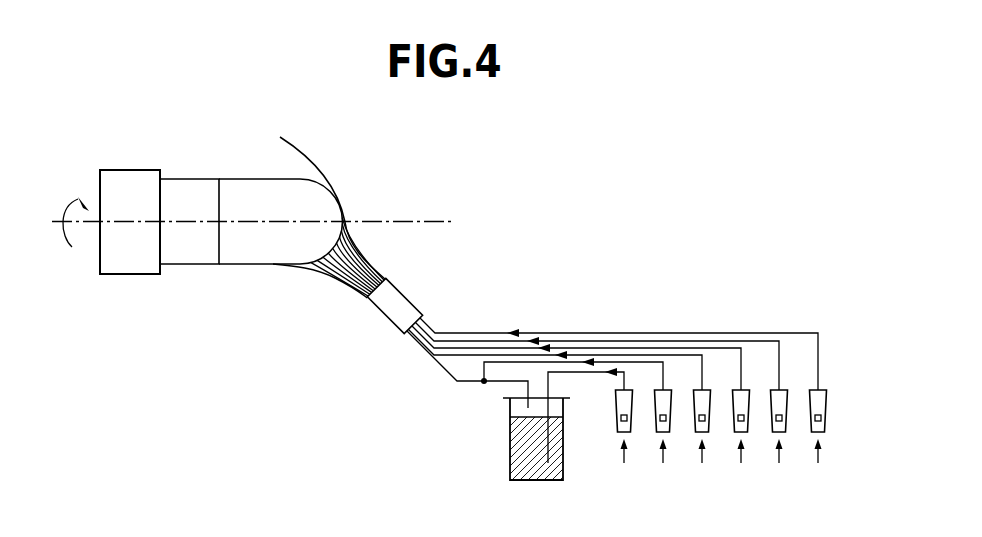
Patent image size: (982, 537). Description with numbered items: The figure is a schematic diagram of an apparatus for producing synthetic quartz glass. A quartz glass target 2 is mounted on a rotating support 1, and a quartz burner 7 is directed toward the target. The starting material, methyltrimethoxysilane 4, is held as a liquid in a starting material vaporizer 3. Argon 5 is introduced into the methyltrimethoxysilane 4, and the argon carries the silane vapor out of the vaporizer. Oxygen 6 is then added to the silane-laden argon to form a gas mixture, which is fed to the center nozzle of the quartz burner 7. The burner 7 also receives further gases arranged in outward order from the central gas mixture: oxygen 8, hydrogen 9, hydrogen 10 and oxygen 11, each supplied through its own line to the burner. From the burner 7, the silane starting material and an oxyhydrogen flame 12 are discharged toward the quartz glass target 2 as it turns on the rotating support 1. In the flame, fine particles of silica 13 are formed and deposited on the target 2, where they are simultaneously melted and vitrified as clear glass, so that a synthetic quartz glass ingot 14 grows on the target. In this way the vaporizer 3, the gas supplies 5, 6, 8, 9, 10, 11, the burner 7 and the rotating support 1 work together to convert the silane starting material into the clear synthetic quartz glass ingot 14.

The rotating support 1 is at (137, 262).
The quartz glass target 2 is at (190, 257).
The synthetic quartz glass ingot 14 is at (252, 257).
The fine particles of silica 13 is at (343, 283).
The oxyhydrogen flame 12 is at (377, 255).
The quartz burner 7 is at (423, 295).
The starting material vaporizer 3 is at (508, 408).
The methyltrimethoxysilane 4 is at (515, 450).
The argon 5 is at (623, 449).
The oxygen 6 is at (662, 449).
The oxygen 8 is at (701, 449).
The hydrogen 9 is at (740, 449).
The hydrogen 10 is at (778, 449).
The oxygen 11 is at (817, 449).